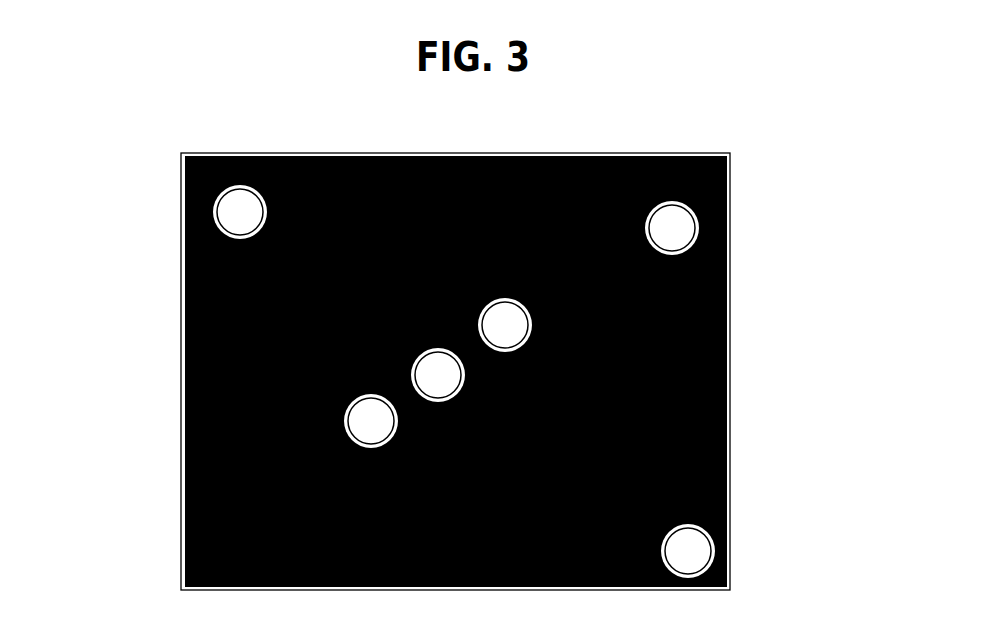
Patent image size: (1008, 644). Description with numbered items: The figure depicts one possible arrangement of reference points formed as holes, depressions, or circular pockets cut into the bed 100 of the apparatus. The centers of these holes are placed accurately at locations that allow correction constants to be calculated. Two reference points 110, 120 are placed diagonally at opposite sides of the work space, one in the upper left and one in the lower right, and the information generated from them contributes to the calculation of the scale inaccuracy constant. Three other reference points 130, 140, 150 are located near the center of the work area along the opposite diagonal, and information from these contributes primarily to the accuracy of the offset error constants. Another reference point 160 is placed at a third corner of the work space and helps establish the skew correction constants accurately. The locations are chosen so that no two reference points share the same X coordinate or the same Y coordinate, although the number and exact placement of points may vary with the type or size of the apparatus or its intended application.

The bed 100 is at (303, 332).
The reference point 110 is at (232, 204).
The reference point 120 is at (680, 543).
The reference point 130 is at (363, 413).
The reference point 140 is at (430, 368).
The reference point 150 is at (497, 317).
The reference point 160 is at (657, 222).